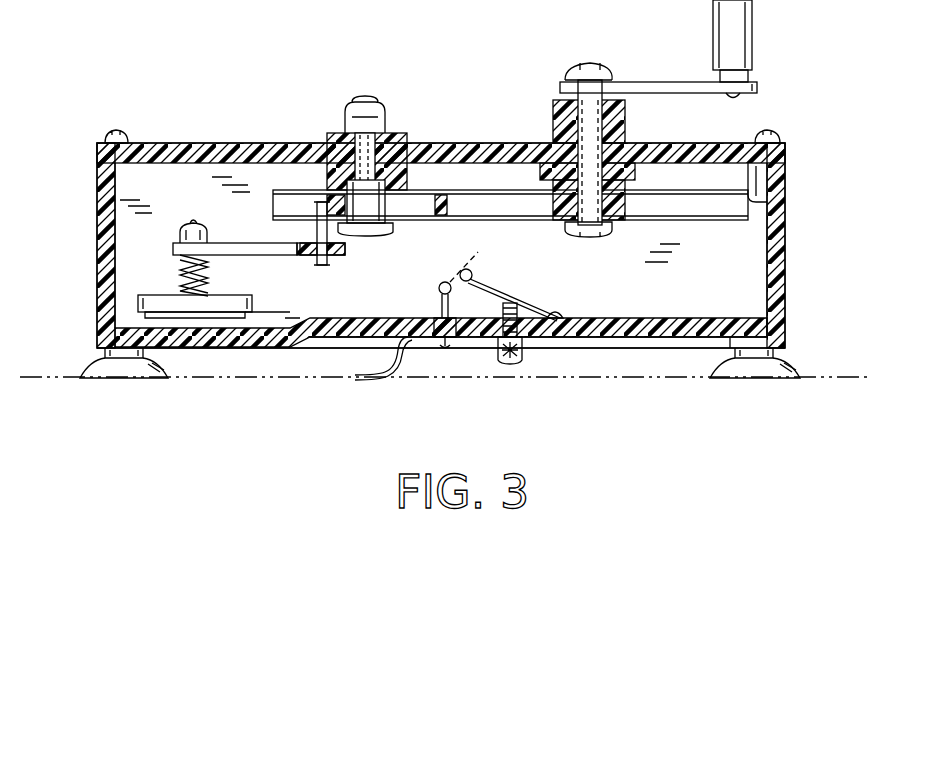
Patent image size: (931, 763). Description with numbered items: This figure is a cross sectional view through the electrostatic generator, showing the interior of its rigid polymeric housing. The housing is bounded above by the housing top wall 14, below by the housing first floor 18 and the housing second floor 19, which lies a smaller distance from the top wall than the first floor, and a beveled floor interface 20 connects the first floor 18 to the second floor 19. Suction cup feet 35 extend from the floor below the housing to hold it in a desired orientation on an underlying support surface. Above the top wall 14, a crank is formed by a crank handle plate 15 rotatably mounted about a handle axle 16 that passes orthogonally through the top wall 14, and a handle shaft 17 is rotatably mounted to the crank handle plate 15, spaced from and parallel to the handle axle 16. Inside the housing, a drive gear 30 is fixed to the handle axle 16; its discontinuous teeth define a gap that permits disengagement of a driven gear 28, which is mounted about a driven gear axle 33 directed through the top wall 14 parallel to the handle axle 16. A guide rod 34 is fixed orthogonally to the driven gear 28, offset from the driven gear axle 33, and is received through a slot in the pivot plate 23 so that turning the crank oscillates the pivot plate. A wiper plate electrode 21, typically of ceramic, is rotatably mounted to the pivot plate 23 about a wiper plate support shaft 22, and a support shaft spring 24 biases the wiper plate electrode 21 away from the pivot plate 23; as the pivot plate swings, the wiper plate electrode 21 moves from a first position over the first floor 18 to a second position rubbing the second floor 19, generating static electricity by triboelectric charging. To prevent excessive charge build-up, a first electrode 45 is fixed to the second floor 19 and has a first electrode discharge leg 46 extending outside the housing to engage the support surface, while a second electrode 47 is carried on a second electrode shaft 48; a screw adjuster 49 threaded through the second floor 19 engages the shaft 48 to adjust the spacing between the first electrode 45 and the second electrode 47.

The housing top wall 14 is at (200, 143).
The crank handle plate 15 is at (697, 85).
The handle axle 16 is at (598, 143).
The handle shaft 17 is at (735, 62).
The housing first floor 18 is at (255, 322).
The housing second floor 19 is at (373, 318).
The beveled floor interface 20 is at (302, 302).
The wiper plate electrode 21 is at (165, 305).
The wiper plate support shaft 22 is at (203, 279).
The pivot plate 23 is at (277, 248).
The support shaft spring 24 is at (158, 272).
The driven gear 28 is at (308, 200).
The drive gear 30 is at (700, 215).
The driven gear axle 33 is at (365, 160).
The guide rod 34 is at (328, 270).
The suction cup feet 35 is at (747, 368).
The first electrode 45 is at (447, 282).
The first electrode discharge leg 46 is at (378, 378).
The second electrode 47 is at (472, 273).
The second electrode shaft 48 is at (522, 300).
The screw adjuster 49 is at (518, 340).